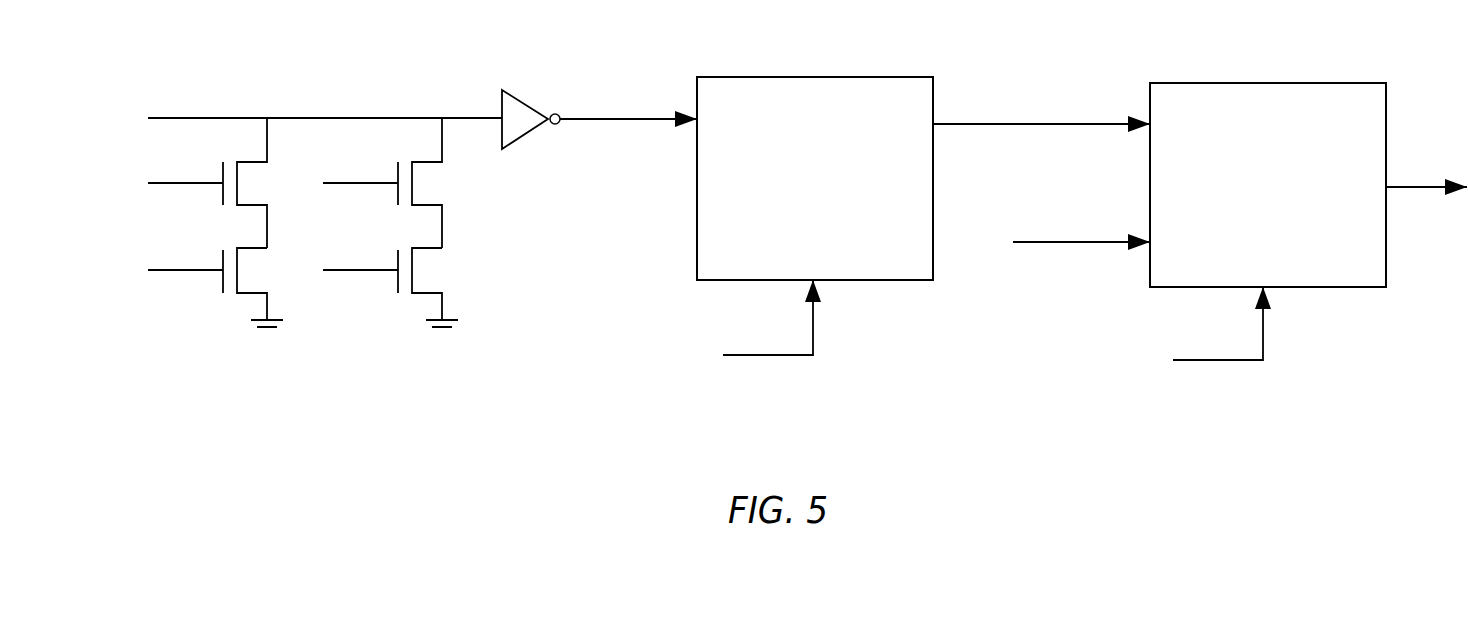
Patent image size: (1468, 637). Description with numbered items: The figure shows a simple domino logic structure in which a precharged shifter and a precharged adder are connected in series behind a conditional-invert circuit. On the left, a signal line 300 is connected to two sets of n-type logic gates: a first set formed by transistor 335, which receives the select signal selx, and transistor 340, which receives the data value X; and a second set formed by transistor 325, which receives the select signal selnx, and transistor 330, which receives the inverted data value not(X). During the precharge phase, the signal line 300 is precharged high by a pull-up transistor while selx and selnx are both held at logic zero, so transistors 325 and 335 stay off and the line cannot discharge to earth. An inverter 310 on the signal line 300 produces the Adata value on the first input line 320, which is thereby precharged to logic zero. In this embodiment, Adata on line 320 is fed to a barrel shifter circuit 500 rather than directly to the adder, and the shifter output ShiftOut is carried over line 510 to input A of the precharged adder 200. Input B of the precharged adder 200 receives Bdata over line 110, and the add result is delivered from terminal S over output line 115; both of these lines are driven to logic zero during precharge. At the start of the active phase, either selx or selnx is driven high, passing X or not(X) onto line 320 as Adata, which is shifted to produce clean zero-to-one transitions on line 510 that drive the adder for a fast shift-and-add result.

The signal line 300 is at (226, 118).
The inverter 310 is at (521, 90).
The first input line 320 is at (656, 122).
The first n-type transistor of second set of logic gates 325 is at (240, 195).
The second n-type transistor of second set of logic gates 330 is at (240, 282).
The first n-type transistor of first set of logic gates 335 is at (415, 197).
The second n-type transistor of first set of logic gates 340 is at (415, 284).
The barrel shifter circuit 500 is at (860, 77).
The ShiftOut line 510 is at (1063, 123).
The second input line 110 is at (1113, 248).
The precharged adder 200 is at (1210, 83).
The output line 115 is at (1392, 187).